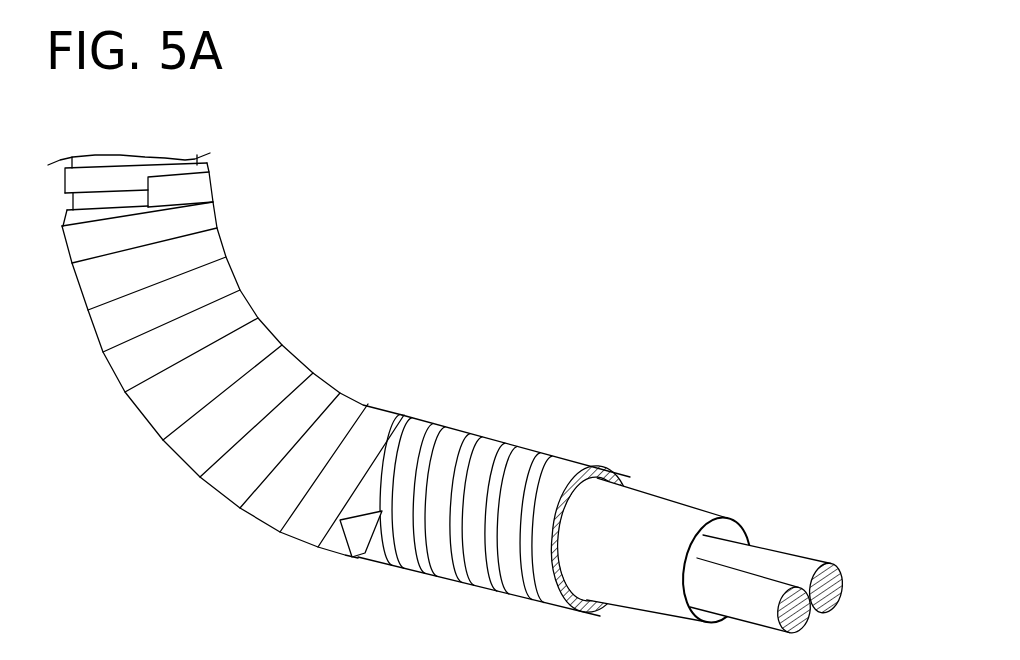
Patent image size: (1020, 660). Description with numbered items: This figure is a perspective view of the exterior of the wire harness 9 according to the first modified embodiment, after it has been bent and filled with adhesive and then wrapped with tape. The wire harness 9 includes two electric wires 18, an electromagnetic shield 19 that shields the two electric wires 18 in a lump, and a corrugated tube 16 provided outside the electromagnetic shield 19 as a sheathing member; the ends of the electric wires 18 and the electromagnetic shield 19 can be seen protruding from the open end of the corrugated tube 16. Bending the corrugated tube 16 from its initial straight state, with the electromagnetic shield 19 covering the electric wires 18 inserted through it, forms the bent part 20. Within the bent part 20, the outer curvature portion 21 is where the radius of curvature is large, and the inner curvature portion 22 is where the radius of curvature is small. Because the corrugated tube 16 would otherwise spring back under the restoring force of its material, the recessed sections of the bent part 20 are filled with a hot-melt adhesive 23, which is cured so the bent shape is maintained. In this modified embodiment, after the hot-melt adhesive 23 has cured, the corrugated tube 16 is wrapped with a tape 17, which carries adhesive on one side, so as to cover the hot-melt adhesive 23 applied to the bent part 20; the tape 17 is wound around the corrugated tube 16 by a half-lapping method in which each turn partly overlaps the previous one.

The wire harness 9 is at (552, 280).
The corrugated tube 16 is at (443, 577).
The tape 17 is at (348, 540).
The electric wire 18 is at (758, 588).
The electromagnetic shield 19 is at (680, 504).
The bent part 20 is at (175, 323).
The outer curvature portion 21 is at (53, 342).
The inner curvature portion 22 is at (267, 249).
The hot-melt adhesive 23 is at (343, 407).